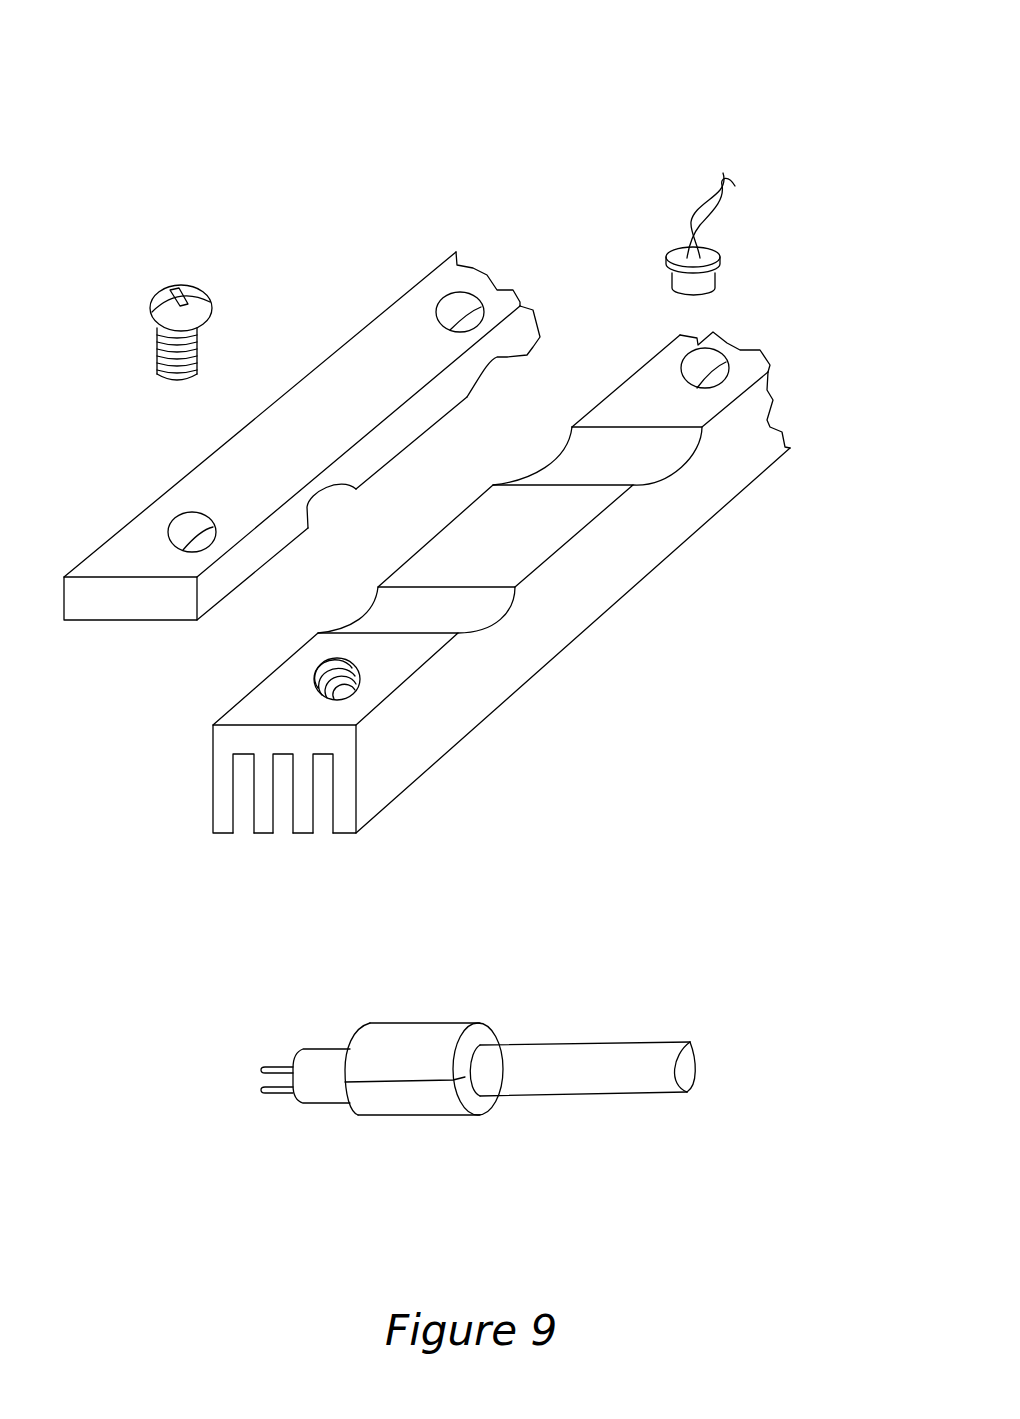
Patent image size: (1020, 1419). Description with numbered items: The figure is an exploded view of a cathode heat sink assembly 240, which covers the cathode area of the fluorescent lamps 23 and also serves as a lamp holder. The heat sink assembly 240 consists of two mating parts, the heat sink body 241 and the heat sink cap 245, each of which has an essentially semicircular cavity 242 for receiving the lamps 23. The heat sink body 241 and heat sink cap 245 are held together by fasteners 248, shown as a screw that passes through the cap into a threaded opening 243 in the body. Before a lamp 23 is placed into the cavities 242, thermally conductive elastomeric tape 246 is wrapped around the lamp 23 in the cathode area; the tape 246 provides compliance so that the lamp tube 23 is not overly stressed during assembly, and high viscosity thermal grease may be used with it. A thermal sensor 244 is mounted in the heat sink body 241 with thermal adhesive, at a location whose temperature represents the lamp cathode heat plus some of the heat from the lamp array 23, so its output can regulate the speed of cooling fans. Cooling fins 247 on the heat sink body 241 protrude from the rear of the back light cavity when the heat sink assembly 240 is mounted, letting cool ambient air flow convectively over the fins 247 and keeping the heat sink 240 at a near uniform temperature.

The cathode heat sink assembly 240 is at (842, 130).
The heat sink body 241 is at (505, 666).
The semicircular cavities 242 is at (328, 497).
The threaded hole 243 is at (717, 358).
The thermal sensor 244 is at (718, 278).
The heat sink cap 245 is at (407, 420).
The thermally conductive elastomeric tape 246 is at (383, 1038).
The cooling fins 247 is at (265, 795).
The fasteners 248 is at (181, 310).
The fluorescent lamps 23 is at (560, 1078).